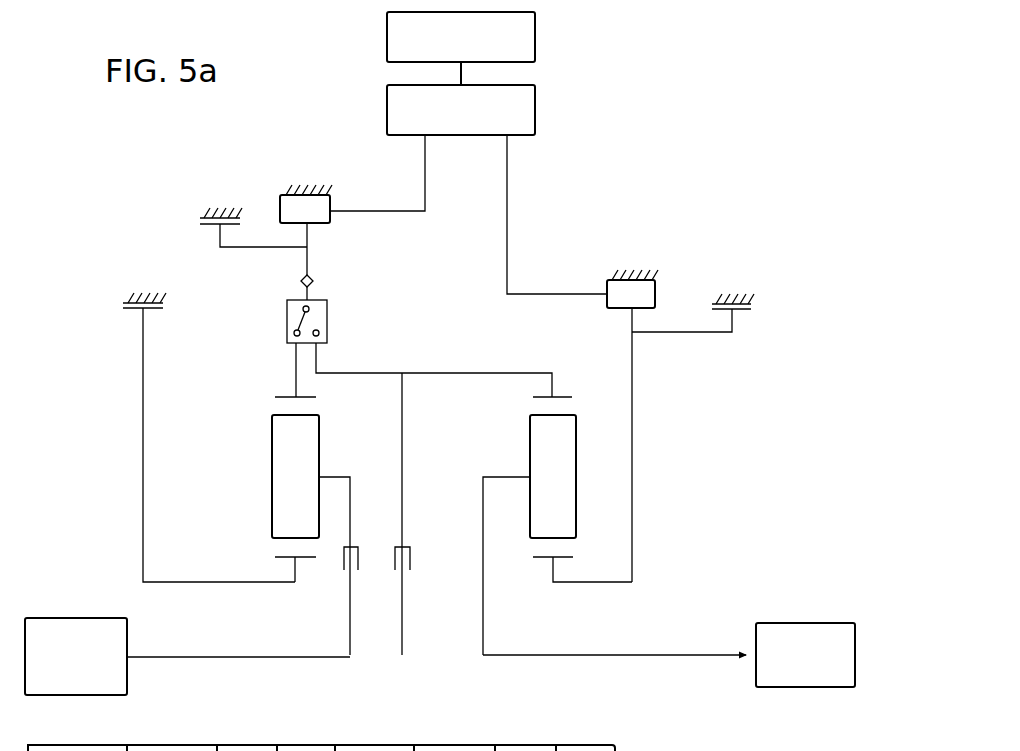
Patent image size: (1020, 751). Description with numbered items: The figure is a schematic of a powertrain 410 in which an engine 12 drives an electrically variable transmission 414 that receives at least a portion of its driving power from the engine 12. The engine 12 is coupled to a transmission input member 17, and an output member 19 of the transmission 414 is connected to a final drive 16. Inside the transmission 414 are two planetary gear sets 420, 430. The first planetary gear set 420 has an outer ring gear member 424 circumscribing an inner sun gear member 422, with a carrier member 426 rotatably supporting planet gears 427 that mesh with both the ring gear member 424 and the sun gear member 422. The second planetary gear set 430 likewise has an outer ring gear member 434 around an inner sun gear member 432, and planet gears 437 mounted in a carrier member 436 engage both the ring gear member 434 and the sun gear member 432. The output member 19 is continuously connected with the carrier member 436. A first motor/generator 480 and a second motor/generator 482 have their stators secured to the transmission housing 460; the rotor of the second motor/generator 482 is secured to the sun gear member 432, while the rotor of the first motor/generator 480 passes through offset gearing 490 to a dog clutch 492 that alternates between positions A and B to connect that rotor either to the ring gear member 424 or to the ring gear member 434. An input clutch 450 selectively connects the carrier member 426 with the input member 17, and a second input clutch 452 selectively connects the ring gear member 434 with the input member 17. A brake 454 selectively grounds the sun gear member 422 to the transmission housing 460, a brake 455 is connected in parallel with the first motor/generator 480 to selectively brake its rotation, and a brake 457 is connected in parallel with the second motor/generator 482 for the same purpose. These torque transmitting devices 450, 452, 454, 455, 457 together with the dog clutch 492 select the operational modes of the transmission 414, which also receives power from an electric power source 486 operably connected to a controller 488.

The engine 12 is at (94, 602).
The final drive 16 is at (790, 604).
The transmission input member 17 is at (164, 660).
The output member 19 is at (717, 658).
The powertrain 410 is at (700, 142).
The electrically variable transmission 414 is at (743, 170).
The first planetary gear set 420 is at (286, 562).
The inner sun gear member 422 is at (305, 562).
The outer ring gear member 424 is at (292, 396).
The carrier member 426 is at (329, 470).
The planet gears 427 is at (295, 476).
The second planetary gear set 430 is at (541, 562).
The inner sun gear member 432 is at (562, 562).
The outer ring gear member 434 is at (544, 392).
The carrier member 436 is at (518, 470).
The planet gears 437 is at (553, 476).
The input clutch 450 is at (361, 544).
The input clutch 452 is at (413, 544).
The brake 454 is at (116, 303).
The brake 455 is at (196, 218).
The brake 457 is at (756, 305).
The transmission housing 460 is at (283, 187).
The first motor/generator 480 is at (277, 190).
The second motor/generator 482 is at (661, 278).
The electric power source 486 is at (387, 40).
The controller 488 is at (387, 110).
The offset gearing 490 is at (295, 284).
The dog clutch 492 is at (286, 328).